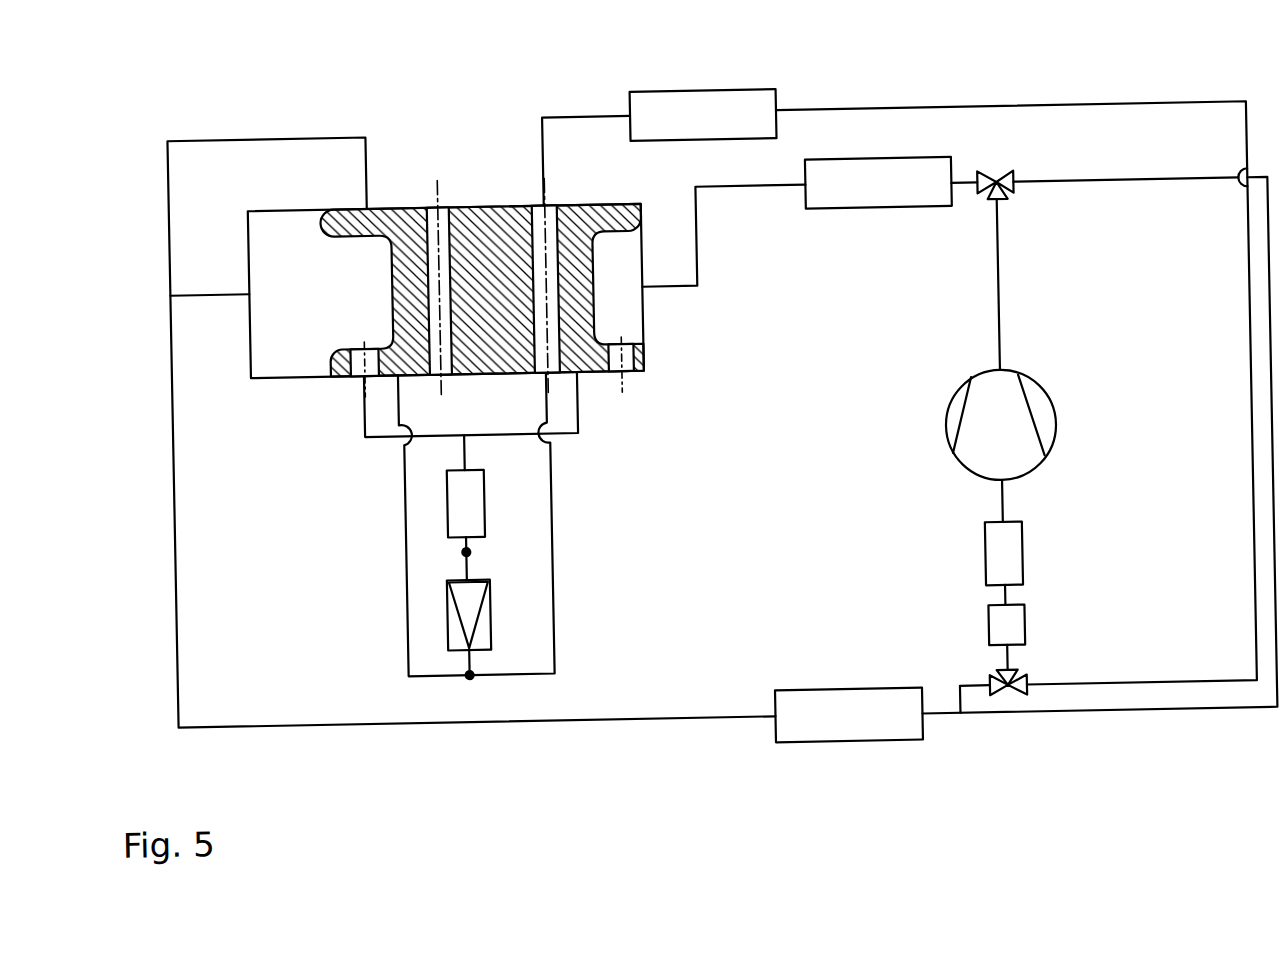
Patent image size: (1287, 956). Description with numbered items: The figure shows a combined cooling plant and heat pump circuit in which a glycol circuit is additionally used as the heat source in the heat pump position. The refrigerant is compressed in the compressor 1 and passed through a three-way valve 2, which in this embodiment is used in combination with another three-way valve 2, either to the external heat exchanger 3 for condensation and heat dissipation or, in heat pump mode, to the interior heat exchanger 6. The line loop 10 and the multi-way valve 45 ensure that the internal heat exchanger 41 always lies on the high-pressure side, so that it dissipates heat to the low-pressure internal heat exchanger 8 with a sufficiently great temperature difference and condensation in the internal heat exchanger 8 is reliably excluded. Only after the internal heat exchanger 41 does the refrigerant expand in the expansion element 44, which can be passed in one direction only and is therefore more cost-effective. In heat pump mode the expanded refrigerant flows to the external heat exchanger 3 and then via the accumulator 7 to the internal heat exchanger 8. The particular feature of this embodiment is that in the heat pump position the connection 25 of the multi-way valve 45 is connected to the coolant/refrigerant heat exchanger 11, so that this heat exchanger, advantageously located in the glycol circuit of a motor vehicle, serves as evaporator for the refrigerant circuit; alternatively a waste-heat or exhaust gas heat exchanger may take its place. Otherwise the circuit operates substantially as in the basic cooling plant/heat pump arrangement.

The compressor 1 is at (1041, 417).
The three-way valve 2 is at (989, 202).
The external heat exchanger 3 is at (843, 180).
The interior heat exchanger 6 is at (877, 733).
The accumulator 7 is at (1002, 622).
The internal heat exchanger 8 is at (1001, 550).
The line loop 10 is at (464, 542).
The coolant/refrigerant heat exchanger 11 is at (733, 103).
The connection 25 is at (548, 161).
The internal heat exchanger 41 is at (483, 493).
The expansion element 44 is at (465, 598).
The multi-way valve 45 is at (417, 192).